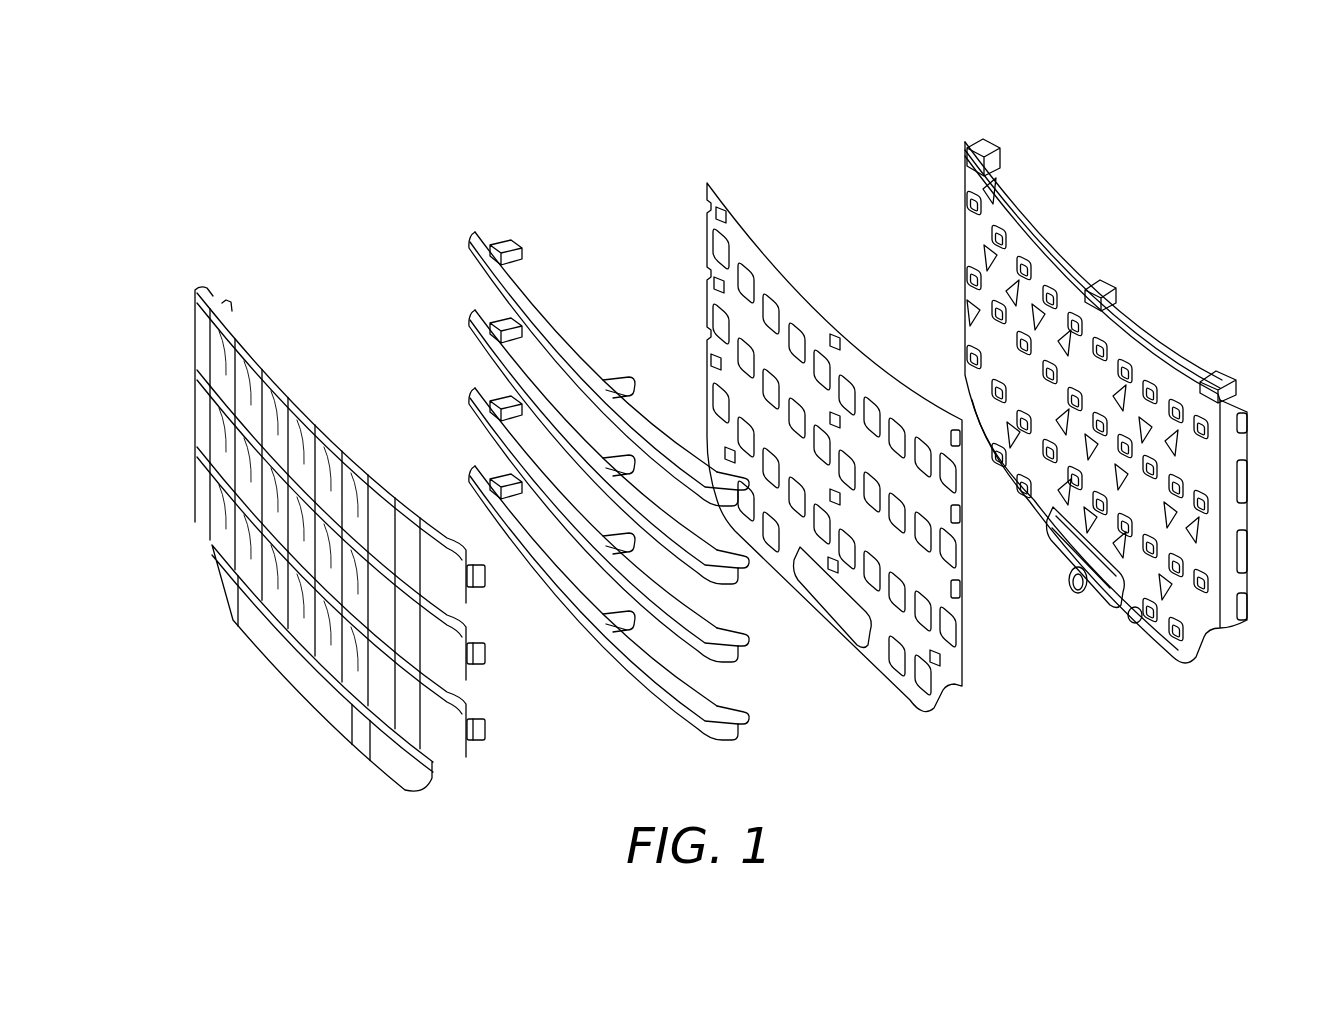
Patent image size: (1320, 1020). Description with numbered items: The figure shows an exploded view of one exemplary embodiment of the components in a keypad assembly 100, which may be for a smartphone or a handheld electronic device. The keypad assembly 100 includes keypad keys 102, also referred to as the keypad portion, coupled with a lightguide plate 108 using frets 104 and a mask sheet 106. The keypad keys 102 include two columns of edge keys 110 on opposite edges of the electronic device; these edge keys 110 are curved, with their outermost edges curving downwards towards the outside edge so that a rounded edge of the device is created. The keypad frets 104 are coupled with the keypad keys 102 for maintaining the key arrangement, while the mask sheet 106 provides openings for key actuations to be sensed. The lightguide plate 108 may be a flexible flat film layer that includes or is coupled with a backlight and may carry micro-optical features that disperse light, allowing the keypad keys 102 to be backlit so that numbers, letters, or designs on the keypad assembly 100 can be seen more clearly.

The keypad assembly 100 is at (1188, 50).
The keypad keys 102 is at (200, 267).
The frets 104 is at (463, 213).
The mask sheet 106 is at (706, 179).
The lightguide plate 108 is at (968, 134).
The edge keys 110 is at (193, 332).